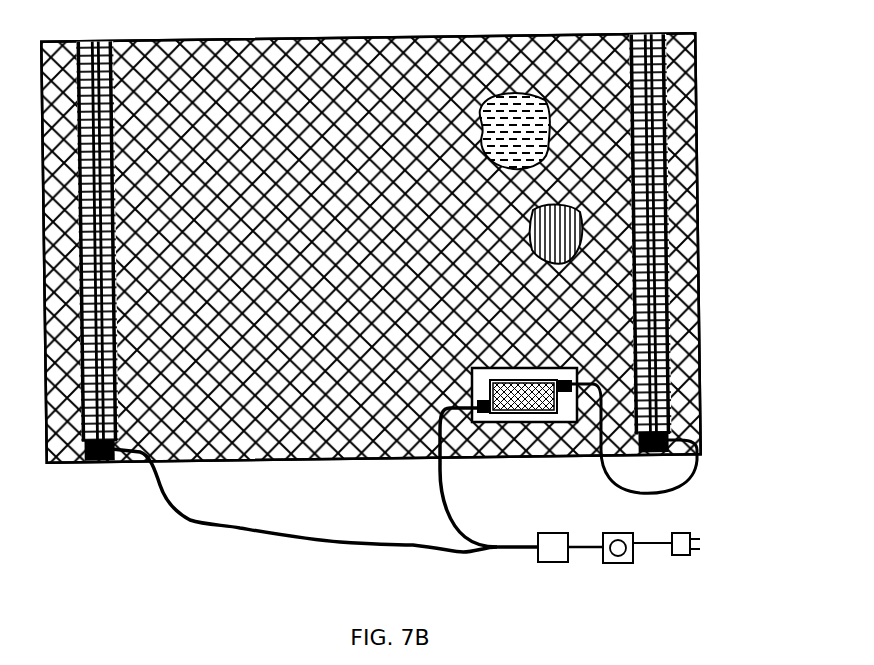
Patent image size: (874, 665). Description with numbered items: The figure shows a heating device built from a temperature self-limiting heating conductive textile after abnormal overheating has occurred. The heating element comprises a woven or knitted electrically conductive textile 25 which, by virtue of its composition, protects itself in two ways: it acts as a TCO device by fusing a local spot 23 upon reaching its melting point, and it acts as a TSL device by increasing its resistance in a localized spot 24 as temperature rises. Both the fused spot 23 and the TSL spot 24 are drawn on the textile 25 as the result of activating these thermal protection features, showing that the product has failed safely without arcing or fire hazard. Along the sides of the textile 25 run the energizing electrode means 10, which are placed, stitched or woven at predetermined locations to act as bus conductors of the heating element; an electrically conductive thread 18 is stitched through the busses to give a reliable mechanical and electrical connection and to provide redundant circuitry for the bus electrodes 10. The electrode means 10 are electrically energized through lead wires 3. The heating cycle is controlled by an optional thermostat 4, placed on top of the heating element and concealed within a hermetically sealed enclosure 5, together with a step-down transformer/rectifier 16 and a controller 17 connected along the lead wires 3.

The electrically conductive textile 25 is at (547, 80).
The fused local spot 23 is at (523, 128).
The localized TSL spot 24 is at (550, 222).
The electrically conductive thread 18 is at (668, 296).
The hermetically sealed enclosure 5 is at (577, 367).
The energizing electrode means 10 is at (96, 465).
The thermostat 4 is at (513, 413).
The lead wires 3 is at (333, 547).
The step-down transformer/rectifier 16 is at (553, 563).
The controller 17 is at (610, 563).